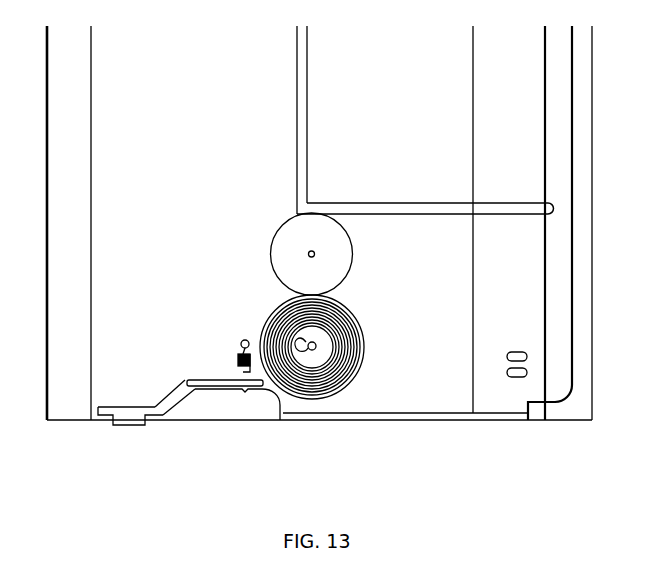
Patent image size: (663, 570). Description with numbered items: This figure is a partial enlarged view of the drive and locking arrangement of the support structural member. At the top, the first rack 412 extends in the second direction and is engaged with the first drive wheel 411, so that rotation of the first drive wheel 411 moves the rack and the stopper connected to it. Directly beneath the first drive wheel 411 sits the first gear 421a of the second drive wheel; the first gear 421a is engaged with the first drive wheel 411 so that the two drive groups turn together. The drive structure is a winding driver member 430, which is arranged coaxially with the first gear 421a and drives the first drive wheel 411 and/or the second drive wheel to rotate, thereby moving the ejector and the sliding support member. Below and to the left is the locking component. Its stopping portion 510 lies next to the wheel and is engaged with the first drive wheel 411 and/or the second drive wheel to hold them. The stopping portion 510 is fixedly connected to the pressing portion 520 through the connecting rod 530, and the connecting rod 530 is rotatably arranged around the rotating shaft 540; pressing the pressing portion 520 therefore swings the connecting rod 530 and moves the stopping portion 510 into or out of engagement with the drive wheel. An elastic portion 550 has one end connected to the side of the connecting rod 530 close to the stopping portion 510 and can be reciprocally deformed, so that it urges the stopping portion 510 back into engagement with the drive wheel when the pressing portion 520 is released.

The first rack 412 is at (420, 210).
The first drive wheel 411 is at (287, 233).
The winding driver member 430 is at (362, 328).
The first gear 421a is at (270, 318).
The elastic portion 550 is at (238, 348).
The rotating shaft 540 is at (183, 377).
The connecting rod 530 is at (212, 390).
The stopping portion 510 is at (283, 410).
The pressing portion 520 is at (132, 426).